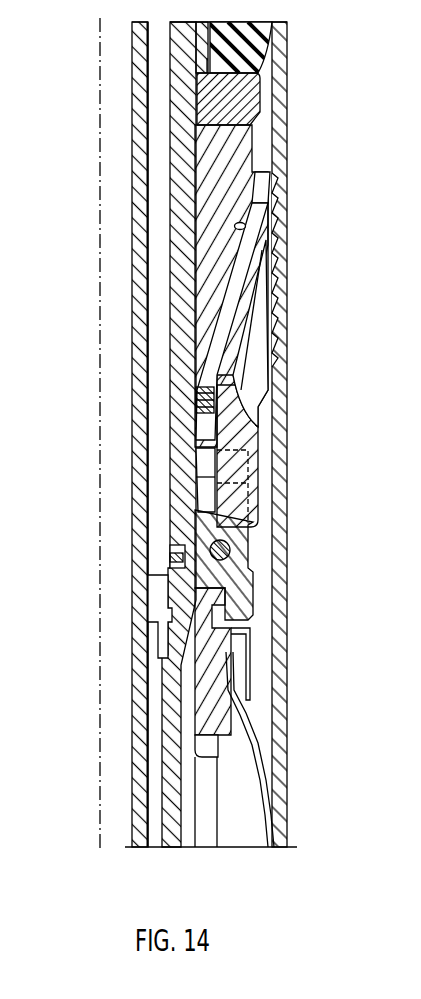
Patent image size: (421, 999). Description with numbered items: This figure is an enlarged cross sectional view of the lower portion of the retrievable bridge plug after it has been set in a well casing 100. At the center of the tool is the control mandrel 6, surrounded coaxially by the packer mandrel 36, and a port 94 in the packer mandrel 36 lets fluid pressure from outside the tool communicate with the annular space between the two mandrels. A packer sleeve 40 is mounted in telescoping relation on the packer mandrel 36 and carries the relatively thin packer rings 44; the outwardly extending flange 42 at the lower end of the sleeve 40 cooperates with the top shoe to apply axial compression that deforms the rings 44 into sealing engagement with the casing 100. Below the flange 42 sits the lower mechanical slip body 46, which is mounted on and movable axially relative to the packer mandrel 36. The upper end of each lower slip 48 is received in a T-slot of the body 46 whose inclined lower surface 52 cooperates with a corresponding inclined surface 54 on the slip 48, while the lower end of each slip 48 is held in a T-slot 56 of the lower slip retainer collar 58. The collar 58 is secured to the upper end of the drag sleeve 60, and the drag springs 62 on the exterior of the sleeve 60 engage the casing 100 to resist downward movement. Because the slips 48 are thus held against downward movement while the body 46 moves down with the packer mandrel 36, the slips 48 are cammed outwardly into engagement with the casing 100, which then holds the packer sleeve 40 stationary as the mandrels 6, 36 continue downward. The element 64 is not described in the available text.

The control mandrel 6 is at (137, 250).
The packer mandrel 36 is at (180, 160).
The packer sleeve 40 is at (204, 30).
The outwardly extending flange 42 is at (245, 97).
The packer rings 44 is at (255, 45).
The lower mechanical slip body 46 is at (238, 152).
The lower slips 48 is at (240, 435).
The inclined lower surface 52 is at (233, 280).
The inclined surface 54 is at (245, 226).
The T-slot 56 is at (205, 500).
The lower slip retainer collar 58 is at (233, 572).
The drag sleeve 60 is at (208, 655).
The drag springs 62 is at (268, 797).
The lower end cap 64 is at (213, 747).
The port 94 is at (173, 560).
The well casing 100 is at (280, 397).